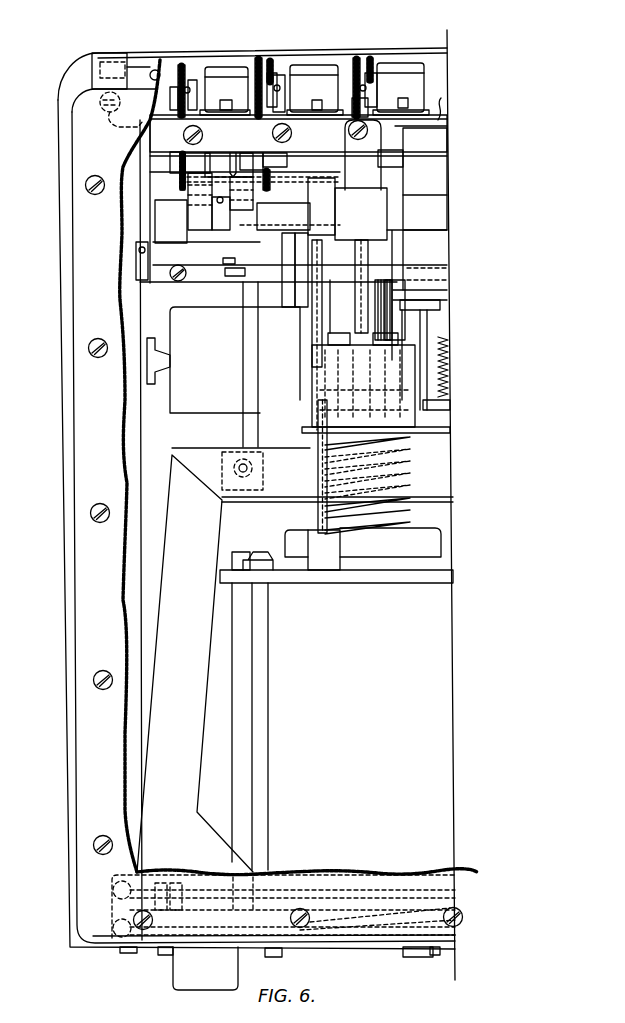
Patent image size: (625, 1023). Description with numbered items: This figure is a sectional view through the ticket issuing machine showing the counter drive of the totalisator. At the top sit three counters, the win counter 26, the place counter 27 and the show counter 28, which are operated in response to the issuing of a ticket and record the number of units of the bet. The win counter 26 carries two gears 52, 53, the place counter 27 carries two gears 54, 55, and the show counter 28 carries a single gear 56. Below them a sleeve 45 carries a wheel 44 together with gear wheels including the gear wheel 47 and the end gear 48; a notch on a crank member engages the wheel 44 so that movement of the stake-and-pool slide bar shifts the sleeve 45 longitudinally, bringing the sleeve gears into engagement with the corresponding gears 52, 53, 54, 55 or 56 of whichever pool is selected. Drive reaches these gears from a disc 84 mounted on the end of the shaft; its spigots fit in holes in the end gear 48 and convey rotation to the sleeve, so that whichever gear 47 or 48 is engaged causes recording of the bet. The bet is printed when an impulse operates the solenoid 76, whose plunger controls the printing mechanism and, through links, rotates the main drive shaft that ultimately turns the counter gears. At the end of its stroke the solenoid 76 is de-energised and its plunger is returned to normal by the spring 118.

The win counter 26 is at (415, 90).
The place counter 27 is at (315, 88).
The show counter 28 is at (225, 72).
The wheel 44 is at (232, 158).
The sleeve 45 is at (245, 153).
The gear wheel 47 is at (267, 188).
The end gear wheel 48 is at (183, 183).
The gear of win counter 52 is at (371, 65).
The gear of win counter 53 is at (357, 58).
The gear of place counter 54 is at (271, 63).
The gear of place counter 55 is at (258, 58).
The gear of show counter 56 is at (183, 65).
The solenoid 76 is at (282, 665).
The disc 84 is at (177, 162).
The spring 118 is at (328, 515).